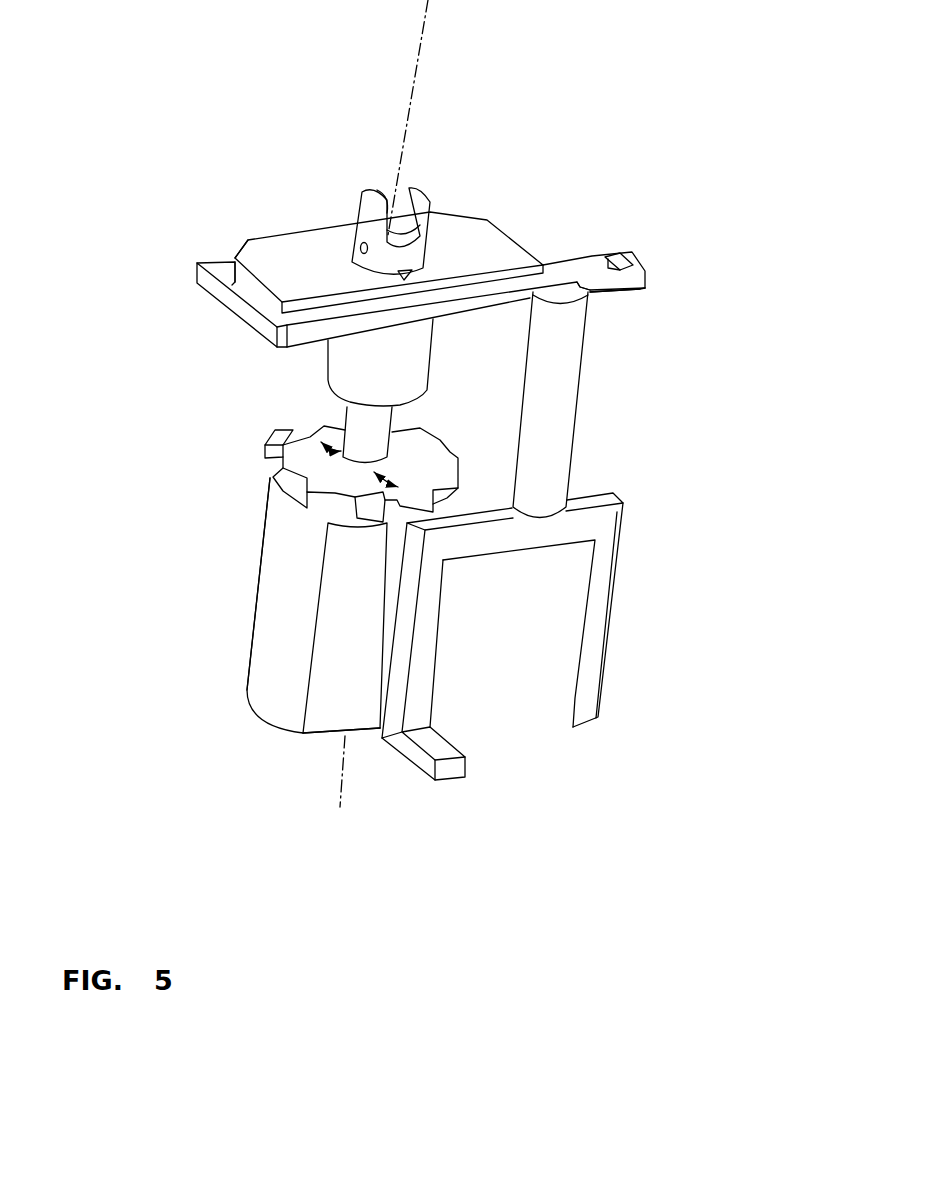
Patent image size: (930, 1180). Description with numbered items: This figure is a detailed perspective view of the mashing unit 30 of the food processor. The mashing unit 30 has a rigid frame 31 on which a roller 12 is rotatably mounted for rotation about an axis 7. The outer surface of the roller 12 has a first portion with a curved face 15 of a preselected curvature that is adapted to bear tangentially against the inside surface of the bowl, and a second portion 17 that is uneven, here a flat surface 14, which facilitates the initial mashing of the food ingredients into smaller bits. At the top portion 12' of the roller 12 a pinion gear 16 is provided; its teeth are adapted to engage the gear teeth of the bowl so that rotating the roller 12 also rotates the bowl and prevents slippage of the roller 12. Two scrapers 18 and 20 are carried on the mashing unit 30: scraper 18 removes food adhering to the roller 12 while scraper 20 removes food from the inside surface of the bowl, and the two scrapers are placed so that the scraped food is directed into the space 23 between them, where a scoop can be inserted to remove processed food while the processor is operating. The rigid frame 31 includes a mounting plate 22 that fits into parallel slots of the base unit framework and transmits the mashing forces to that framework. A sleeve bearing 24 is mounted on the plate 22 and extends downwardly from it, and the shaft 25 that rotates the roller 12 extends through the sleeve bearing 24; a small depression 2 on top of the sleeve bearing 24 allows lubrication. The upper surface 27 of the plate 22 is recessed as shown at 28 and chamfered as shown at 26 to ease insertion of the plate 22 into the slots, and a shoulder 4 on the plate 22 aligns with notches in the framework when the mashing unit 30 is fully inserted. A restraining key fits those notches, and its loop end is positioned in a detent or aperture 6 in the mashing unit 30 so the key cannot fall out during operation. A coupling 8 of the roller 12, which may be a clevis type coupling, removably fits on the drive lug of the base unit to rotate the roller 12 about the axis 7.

The depression 2 is at (413, 270).
The shoulder 4 is at (500, 288).
The detent or aperture 6 is at (617, 247).
The axis 7 is at (412, 37).
The coupling 8 is at (427, 195).
The roller 12 is at (193, 605).
The top portion of the roller 12' is at (385, 454).
The flat surface 14 is at (340, 620).
The curved face 15 is at (295, 550).
The pinion gear 16 is at (264, 448).
The second portion 17 is at (345, 702).
The scraper 18 is at (443, 687).
The scraper 20 is at (610, 662).
The mounting plate 22 is at (237, 312).
The space 23 is at (519, 509).
The sleeve bearing 24 is at (397, 352).
The shaft 25 is at (362, 430).
The chamfer 26 is at (240, 237).
The upper surface 27 is at (310, 228).
The recess 28 is at (236, 282).
The mashing unit 30 is at (727, 480).
The rigid frame 31 is at (565, 278).